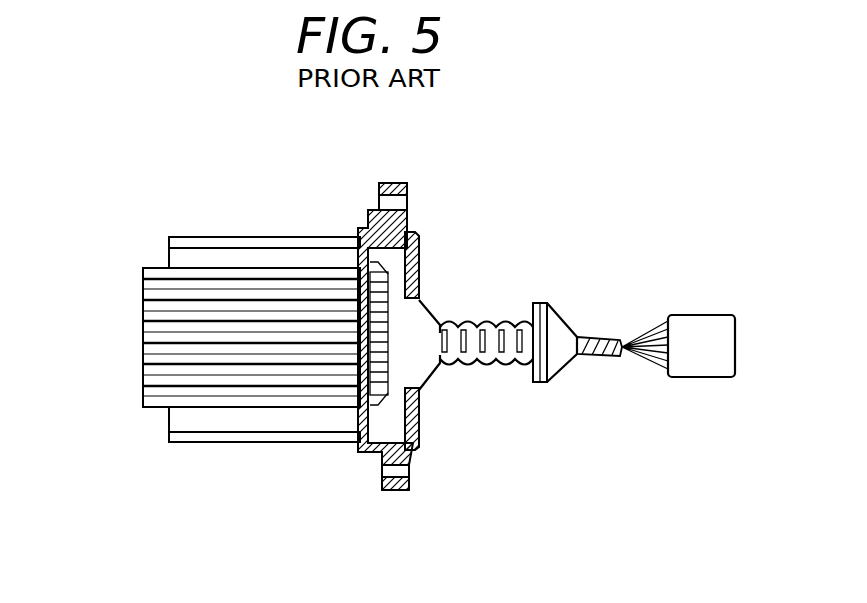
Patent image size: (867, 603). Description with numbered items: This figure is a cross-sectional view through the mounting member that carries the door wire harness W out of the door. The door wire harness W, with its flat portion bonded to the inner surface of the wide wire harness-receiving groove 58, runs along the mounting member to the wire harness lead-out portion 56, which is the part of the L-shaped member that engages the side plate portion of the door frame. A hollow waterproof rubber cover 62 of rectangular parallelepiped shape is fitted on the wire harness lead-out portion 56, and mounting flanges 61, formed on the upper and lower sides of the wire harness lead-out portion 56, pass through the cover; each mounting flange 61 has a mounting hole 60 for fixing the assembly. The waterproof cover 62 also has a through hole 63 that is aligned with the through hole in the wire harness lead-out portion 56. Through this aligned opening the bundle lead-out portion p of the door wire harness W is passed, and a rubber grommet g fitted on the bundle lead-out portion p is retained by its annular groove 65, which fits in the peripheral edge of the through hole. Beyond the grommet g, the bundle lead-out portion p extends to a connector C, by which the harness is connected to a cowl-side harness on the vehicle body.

The wire harness lead-out portion 56 is at (242, 237).
The wire harness-receiving groove 58 is at (182, 256).
The door wire harness W is at (160, 358).
The waterproof rubber cover 62 is at (362, 232).
The mounting hole 60 is at (405, 197).
The mounting flange 61 is at (405, 185).
The through hole 63 is at (433, 366).
The grommet g is at (505, 370).
The annular groove 65 is at (537, 383).
The bundle lead-out portion p is at (602, 335).
The connector C is at (703, 325).